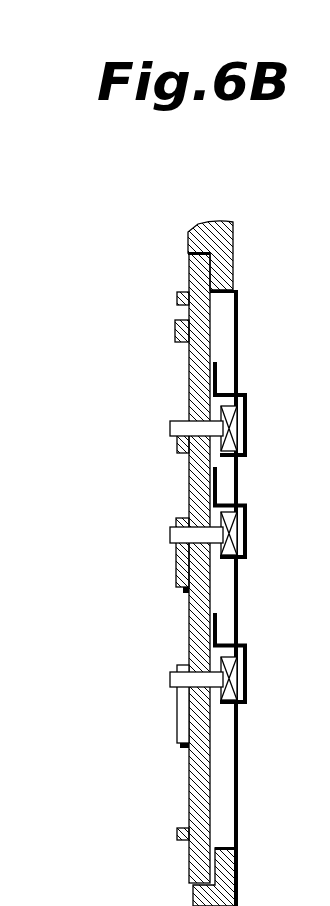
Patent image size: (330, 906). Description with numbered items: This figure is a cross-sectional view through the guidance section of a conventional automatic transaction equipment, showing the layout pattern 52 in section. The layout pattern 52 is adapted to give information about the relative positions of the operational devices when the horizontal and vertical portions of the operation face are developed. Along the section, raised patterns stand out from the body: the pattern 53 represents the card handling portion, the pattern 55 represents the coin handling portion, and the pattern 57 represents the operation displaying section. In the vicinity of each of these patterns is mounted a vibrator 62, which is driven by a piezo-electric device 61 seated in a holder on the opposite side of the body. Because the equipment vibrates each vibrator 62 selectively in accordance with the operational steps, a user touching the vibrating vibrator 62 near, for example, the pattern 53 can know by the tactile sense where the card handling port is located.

The layout pattern 52 is at (177, 297).
The pattern 53 is at (177, 443).
The pattern 55 is at (176, 575).
The pattern 57 is at (177, 715).
The piezo-electric device 61 is at (245, 418).
The vibrator 62 is at (170, 426).